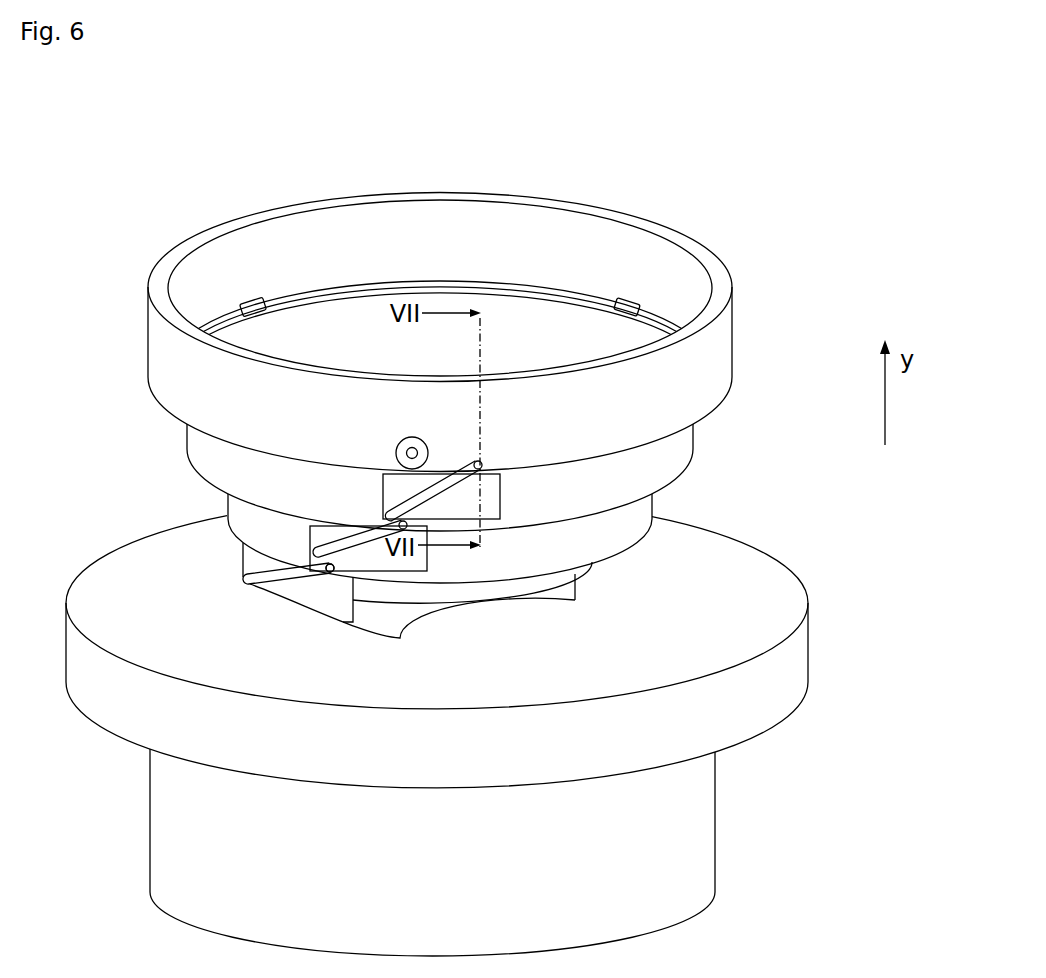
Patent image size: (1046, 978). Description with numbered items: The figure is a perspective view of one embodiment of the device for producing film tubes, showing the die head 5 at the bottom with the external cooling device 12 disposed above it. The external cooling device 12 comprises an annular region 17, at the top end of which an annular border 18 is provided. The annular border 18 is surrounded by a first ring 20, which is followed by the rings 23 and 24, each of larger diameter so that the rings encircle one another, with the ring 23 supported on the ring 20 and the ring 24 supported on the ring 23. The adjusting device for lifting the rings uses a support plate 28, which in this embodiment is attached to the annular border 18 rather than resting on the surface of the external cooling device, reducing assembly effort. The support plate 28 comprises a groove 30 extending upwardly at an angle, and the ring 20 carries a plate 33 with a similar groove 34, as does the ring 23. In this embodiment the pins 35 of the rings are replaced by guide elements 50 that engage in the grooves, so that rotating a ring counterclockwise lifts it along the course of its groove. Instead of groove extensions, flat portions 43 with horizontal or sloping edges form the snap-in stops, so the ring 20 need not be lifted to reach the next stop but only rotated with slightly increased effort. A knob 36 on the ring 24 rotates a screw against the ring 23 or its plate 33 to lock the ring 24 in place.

The die head 5 is at (680, 847).
The external cooling device 12 is at (752, 713).
The annular region 17 is at (548, 606).
The annular border 18 is at (557, 577).
The first ring 20 is at (628, 527).
The ring 23 is at (663, 463).
The ring 24 is at (712, 370).
The support plate 28 is at (327, 608).
The groove 30 is at (243, 578).
The plate 33 is at (428, 552).
The groove 34 is at (343, 553).
The pin 35 is at (638, 303).
The knob 36 is at (415, 452).
The flat portion 43 is at (330, 572).
The guide element 50 is at (334, 573).